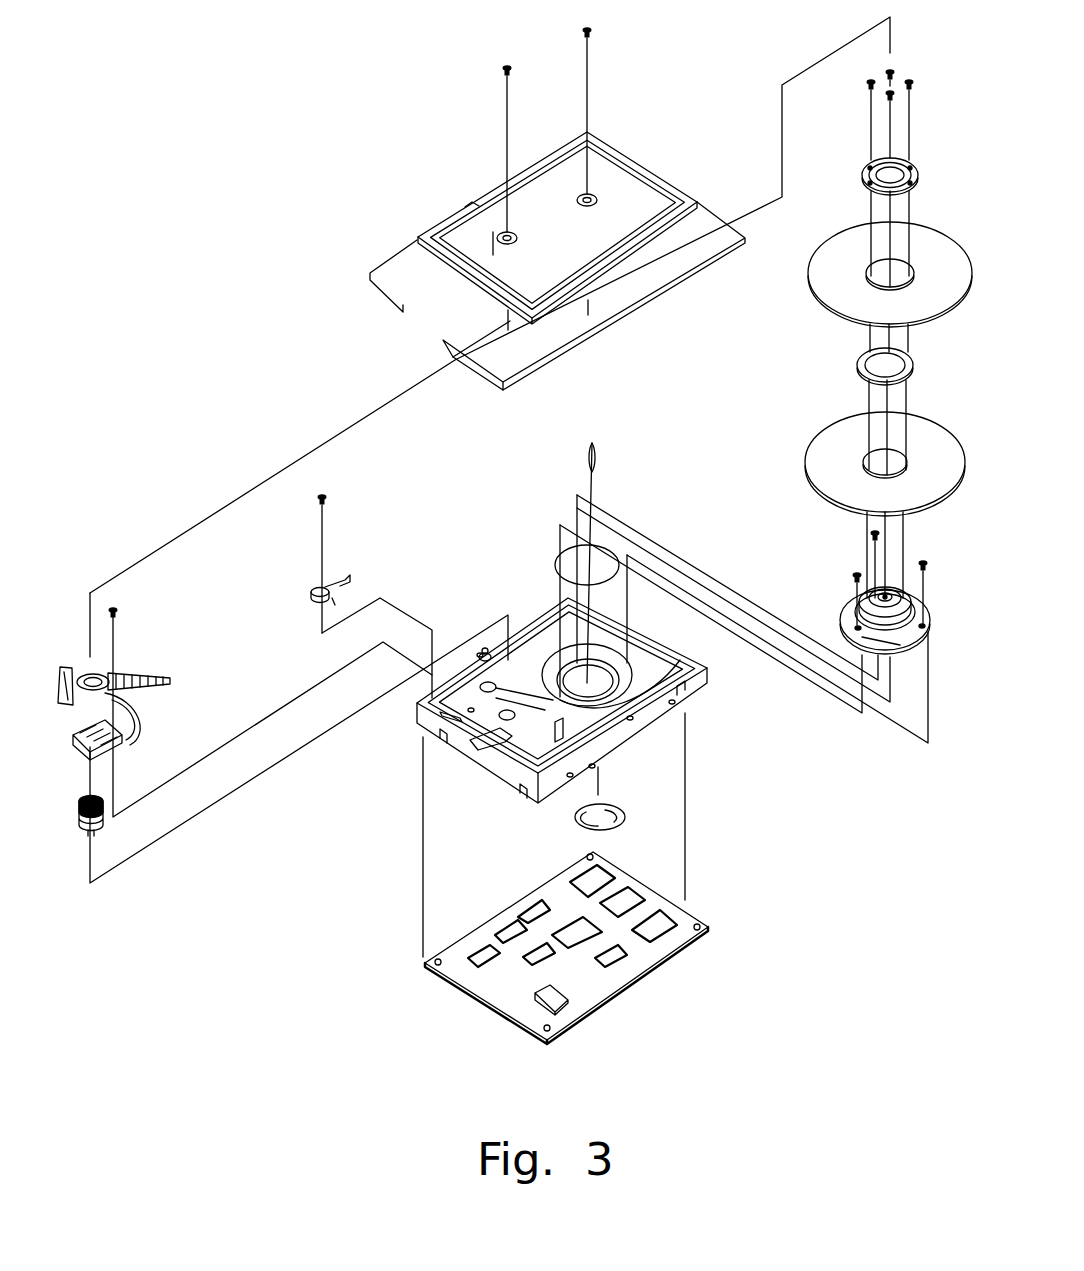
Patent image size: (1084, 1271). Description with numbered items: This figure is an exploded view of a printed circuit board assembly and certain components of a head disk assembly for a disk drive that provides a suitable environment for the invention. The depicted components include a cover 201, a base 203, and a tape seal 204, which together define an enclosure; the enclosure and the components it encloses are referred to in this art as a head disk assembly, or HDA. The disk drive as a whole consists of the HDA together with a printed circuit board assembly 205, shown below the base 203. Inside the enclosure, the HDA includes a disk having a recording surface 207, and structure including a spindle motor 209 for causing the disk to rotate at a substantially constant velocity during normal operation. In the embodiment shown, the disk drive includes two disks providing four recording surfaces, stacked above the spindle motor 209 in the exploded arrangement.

The cover 201 is at (448, 213).
The base 203 is at (700, 697).
The tape seal 204 is at (593, 343).
The printed circuit board assembly 205 is at (677, 953).
The recording surface 207 is at (827, 277).
The spindle motor 209 is at (843, 607).